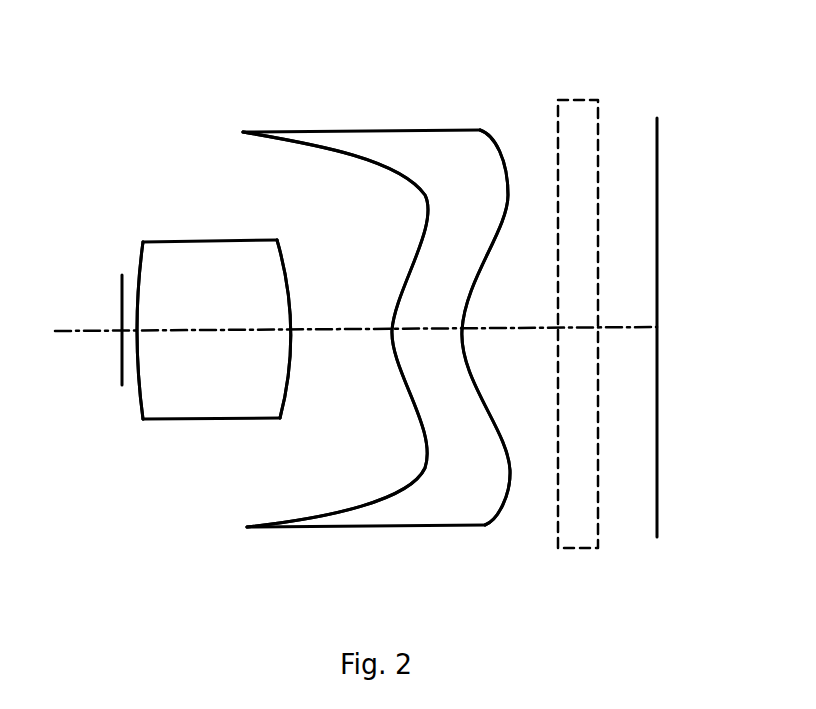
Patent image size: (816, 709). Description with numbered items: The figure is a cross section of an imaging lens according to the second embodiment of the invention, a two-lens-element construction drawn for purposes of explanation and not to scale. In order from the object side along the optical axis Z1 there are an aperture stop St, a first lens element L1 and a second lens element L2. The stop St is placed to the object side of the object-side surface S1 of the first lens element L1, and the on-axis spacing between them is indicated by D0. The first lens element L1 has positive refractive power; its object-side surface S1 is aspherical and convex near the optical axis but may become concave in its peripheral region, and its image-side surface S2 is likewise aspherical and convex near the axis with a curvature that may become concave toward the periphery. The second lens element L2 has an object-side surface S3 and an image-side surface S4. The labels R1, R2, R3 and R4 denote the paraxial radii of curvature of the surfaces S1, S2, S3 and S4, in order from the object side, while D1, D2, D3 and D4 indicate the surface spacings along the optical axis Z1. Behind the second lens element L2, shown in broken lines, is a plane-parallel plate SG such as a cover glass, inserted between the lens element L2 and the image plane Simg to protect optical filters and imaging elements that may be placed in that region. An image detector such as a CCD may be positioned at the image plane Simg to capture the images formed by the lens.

The aperture stop St is at (120, 288).
The on-axis surface spacing of the stop D0 is at (132, 320).
The first lens element L1 is at (217, 331).
The object-side surface of the first lens element S1 is at (142, 405).
The paraxial radius of curvature of surface S1 R1 is at (110, 362).
The image-side surface of the first lens element S2 is at (285, 398).
The paraxial radius of curvature of surface S2 R2 is at (317, 342).
The surface spacing D1 is at (215, 313).
The surface spacing D2 is at (342, 312).
The second lens element L2 is at (368, 327).
The object-side surface of the second lens element S3 is at (318, 517).
The paraxial radius of curvature of surface S3 R3 is at (307, 338).
The image-side surface of the second lens element S4 is at (512, 480).
The paraxial radius of curvature of surface S4 R4 is at (506, 354).
The surface spacing D3 is at (430, 312).
The surface spacing D4 is at (652, 323).
The plane-parallel plate SG is at (575, 115).
The image plane Simg is at (658, 140).
The optical axis Z1 is at (64, 334).